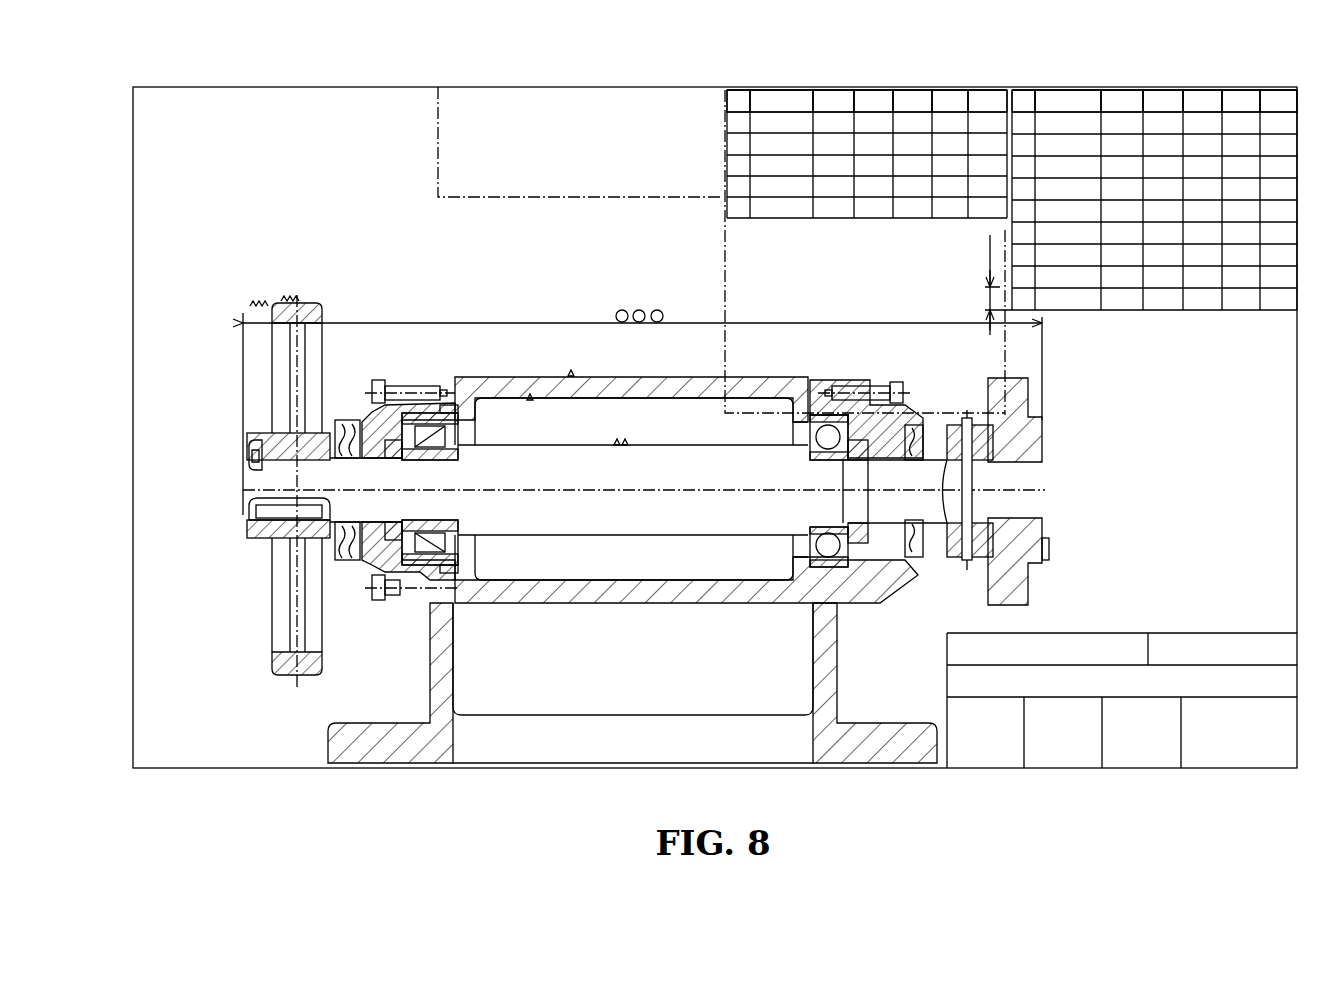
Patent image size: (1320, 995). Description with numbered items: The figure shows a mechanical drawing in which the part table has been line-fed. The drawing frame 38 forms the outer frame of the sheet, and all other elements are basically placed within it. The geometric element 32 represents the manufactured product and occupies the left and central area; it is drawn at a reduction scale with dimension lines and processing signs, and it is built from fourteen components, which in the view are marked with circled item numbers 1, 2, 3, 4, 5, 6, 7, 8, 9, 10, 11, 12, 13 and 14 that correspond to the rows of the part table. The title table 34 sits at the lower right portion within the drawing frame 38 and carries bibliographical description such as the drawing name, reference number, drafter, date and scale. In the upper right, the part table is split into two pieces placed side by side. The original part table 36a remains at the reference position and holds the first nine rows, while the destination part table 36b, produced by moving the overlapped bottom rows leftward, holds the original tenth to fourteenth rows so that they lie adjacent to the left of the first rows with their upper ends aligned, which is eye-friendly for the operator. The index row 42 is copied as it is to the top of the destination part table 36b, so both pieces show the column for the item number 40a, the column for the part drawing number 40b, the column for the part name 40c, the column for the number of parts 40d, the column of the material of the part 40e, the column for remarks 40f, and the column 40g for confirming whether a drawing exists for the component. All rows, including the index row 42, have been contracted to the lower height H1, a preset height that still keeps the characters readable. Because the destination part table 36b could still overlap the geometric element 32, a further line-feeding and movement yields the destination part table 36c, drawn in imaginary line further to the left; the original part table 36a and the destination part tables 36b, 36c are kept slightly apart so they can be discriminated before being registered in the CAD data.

The handwheel 1 is at (268, 665).
The end cap 2 is at (252, 435).
The lock nut 3 is at (250, 510).
The bearing lock ring 4 is at (450, 415).
The bolt 5 is at (378, 381).
The shaft 6 is at (563, 445).
The left bearing cap 7 is at (360, 562).
The right bearing cap 8 is at (828, 417).
The coupling pin 9 is at (965, 417).
The housing 10 is at (526, 397).
The spacer 11 is at (395, 530).
The bearing 12 is at (403, 555).
The seal 13 is at (343, 433).
The flange 14 is at (1030, 398).
The geometric element 32 is at (209, 733).
The title table 34 is at (935, 656).
The original part table 36a is at (1118, 312).
The destination part table 36b is at (798, 220).
The destination part table 36c is at (438, 130).
The drawing frame 38 is at (566, 87).
The column for the item number 40a is at (737, 88).
The column for the part drawing number 40b is at (779, 88).
The column for the part name 40c is at (833, 88).
The column for the number of parts 40d is at (871, 88).
The column of the material of the part 40e is at (911, 88).
The column for remarks 40f is at (947, 88).
The column for confirming whether or not the drawing exists 40g is at (986, 88).
The index row 42 is at (722, 92).
The height H1 is at (985, 322).